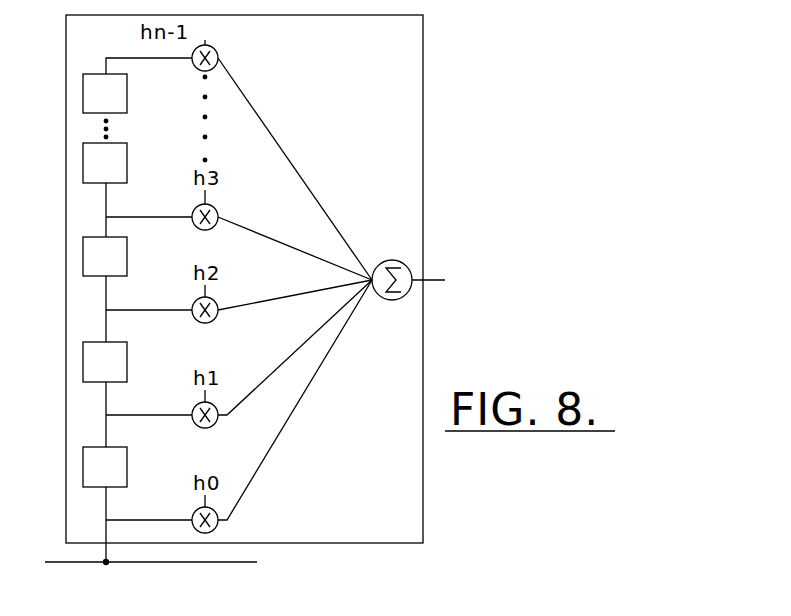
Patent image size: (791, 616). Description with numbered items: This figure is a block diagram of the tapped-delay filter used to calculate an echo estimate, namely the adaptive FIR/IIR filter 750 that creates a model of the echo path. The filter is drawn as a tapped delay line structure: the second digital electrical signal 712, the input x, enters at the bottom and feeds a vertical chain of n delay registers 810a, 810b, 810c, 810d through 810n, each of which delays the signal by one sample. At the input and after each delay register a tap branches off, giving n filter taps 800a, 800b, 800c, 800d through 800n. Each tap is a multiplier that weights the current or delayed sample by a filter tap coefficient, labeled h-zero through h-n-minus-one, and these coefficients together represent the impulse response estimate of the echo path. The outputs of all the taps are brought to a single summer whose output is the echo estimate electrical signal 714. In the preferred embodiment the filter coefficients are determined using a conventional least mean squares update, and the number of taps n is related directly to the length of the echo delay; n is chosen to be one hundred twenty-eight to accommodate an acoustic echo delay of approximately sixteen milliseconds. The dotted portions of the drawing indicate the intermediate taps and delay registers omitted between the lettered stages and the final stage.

The FIR/IIR filter 750 is at (283, 279).
The second digital electrical signal 712 is at (166, 584).
The echo estimate electrical signal 714 is at (436, 272).
The filter tap 800n is at (222, 44).
The filter tap 800d is at (195, 208).
The filter tap 800c is at (195, 301).
The filter tap 800b is at (193, 405).
The filter tap 800a is at (193, 510).
The delay register 810n is at (128, 93).
The delay register 810d is at (128, 165).
The delay register 810c is at (128, 258).
The delay register 810b is at (128, 361).
The delay register 810a is at (128, 467).